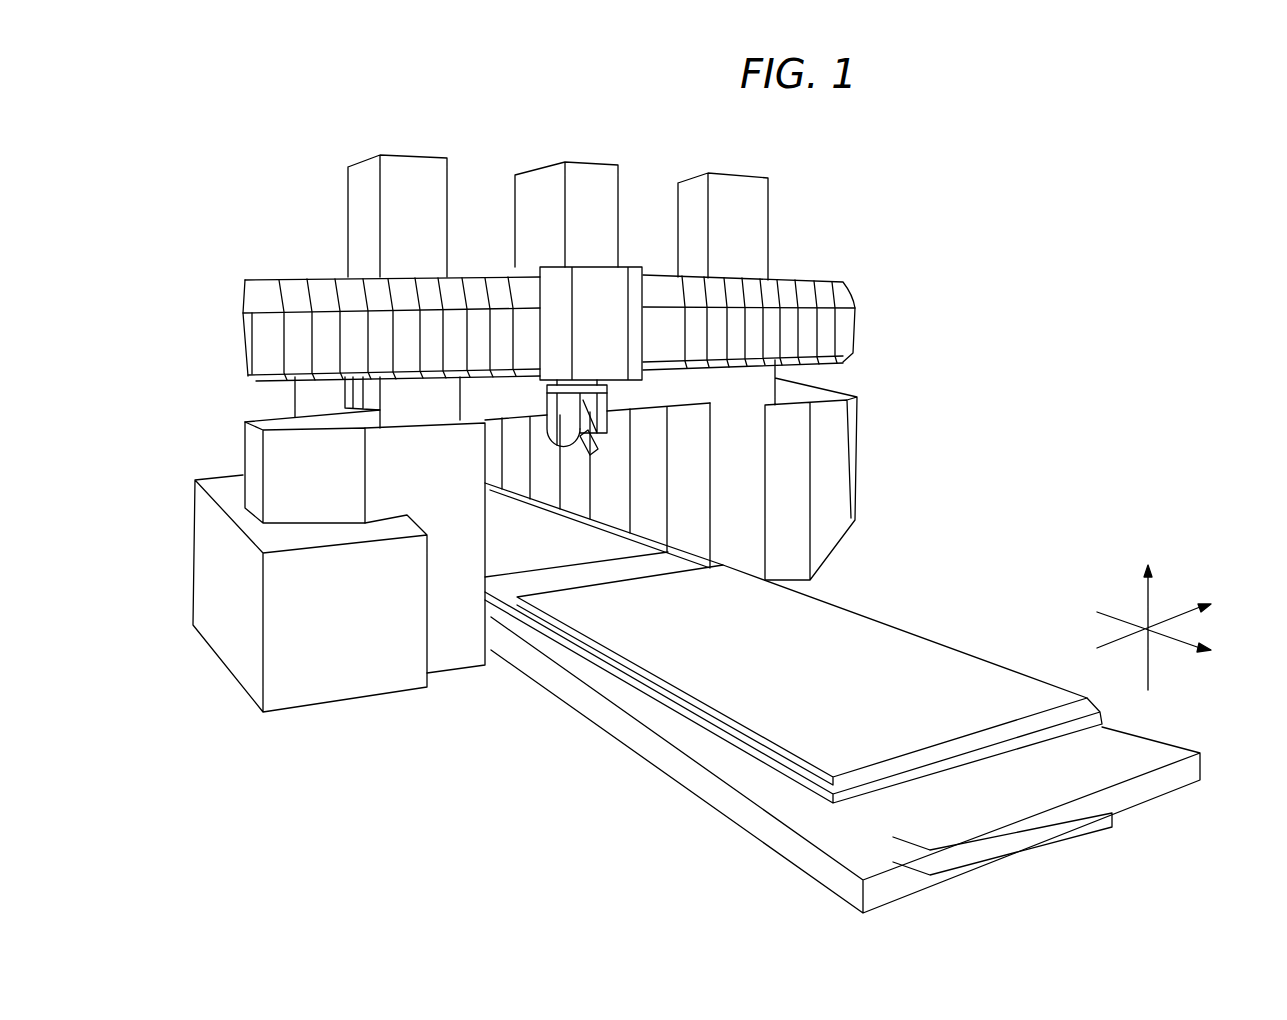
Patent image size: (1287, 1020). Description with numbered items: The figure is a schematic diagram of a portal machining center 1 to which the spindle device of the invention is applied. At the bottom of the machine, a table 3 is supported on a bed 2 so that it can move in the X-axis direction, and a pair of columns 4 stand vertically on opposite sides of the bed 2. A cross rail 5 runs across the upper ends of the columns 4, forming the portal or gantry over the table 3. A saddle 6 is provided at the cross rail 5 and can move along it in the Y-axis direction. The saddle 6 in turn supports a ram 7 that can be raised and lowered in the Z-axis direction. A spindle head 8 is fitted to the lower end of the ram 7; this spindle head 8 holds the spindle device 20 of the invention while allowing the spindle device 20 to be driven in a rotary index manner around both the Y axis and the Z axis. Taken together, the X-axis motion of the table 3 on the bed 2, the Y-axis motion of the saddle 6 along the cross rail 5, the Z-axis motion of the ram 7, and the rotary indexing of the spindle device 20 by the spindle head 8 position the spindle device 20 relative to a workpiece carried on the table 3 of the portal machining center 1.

The portal machining center 1 is at (320, 110).
The bed 2 is at (645, 752).
The table 3 is at (805, 716).
The columns 4 is at (398, 223).
The cross rail 5 is at (270, 345).
The saddle 6 is at (598, 290).
The ram 7 is at (540, 185).
The spindle head 8 is at (607, 410).
The spindle device 20 is at (592, 455).